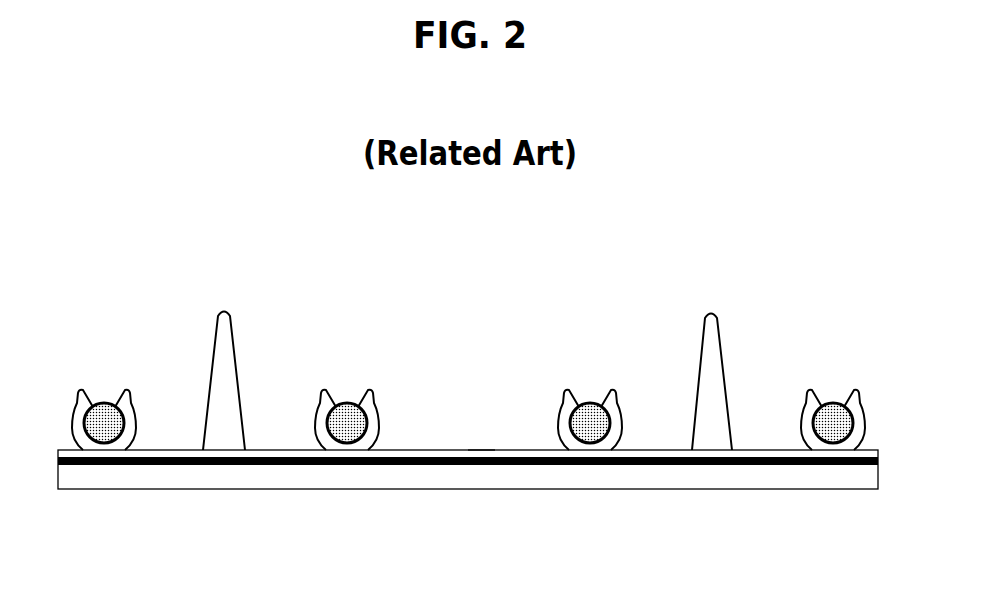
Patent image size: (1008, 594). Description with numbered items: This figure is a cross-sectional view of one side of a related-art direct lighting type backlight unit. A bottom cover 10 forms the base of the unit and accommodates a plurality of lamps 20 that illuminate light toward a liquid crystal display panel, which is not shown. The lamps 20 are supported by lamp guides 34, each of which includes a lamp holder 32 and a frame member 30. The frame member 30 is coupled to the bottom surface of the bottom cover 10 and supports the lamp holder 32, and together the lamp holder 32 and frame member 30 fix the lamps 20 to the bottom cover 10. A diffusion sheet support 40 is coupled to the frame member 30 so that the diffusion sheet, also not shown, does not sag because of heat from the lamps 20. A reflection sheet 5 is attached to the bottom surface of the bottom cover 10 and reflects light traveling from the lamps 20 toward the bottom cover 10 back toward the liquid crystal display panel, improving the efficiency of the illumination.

The reflection sheet 5 is at (519, 463).
The bottom cover 10 is at (422, 473).
The lamp 20 is at (832, 416).
The frame member 30 is at (480, 455).
The lamp holder 32 is at (566, 390).
The lamp guide 34 is at (545, 370).
The diffusion sheet support 40 is at (710, 325).